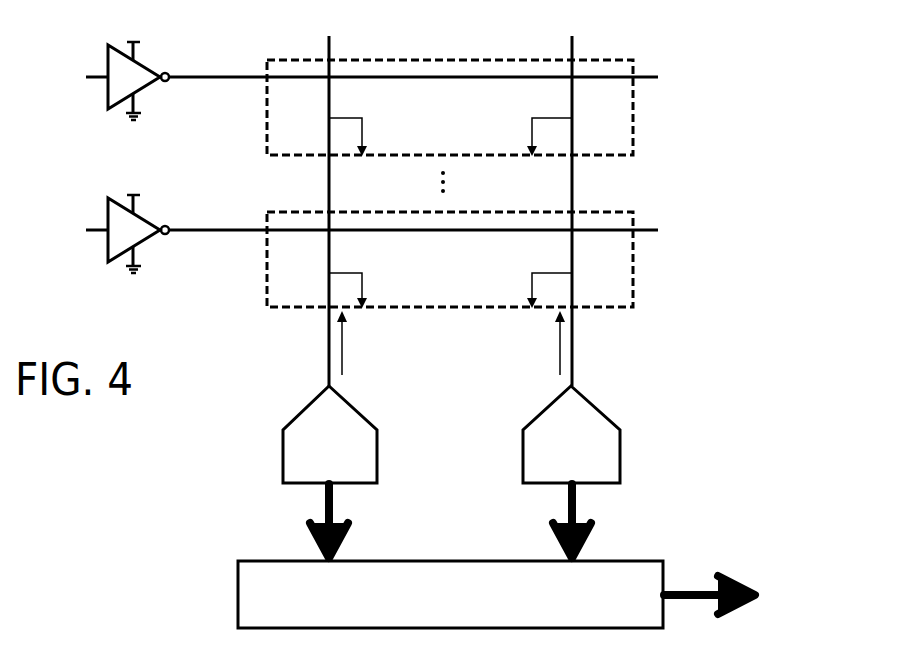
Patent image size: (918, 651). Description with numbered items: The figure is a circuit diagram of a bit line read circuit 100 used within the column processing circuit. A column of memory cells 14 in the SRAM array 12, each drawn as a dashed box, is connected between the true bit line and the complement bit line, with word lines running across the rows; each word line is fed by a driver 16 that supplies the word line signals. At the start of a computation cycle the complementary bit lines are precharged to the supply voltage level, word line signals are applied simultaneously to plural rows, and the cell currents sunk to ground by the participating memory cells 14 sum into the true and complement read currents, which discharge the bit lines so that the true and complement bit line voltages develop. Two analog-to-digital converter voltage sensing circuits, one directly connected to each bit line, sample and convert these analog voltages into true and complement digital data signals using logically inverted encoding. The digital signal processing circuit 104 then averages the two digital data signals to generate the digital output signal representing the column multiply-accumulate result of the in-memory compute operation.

The bit line read circuit 100 is at (218, 490).
The word line driver 16 is at (100, 92).
The array 12 is at (669, 173).
The memory cells 14 is at (635, 106).
The digital signal processing circuit 104 is at (238, 592).